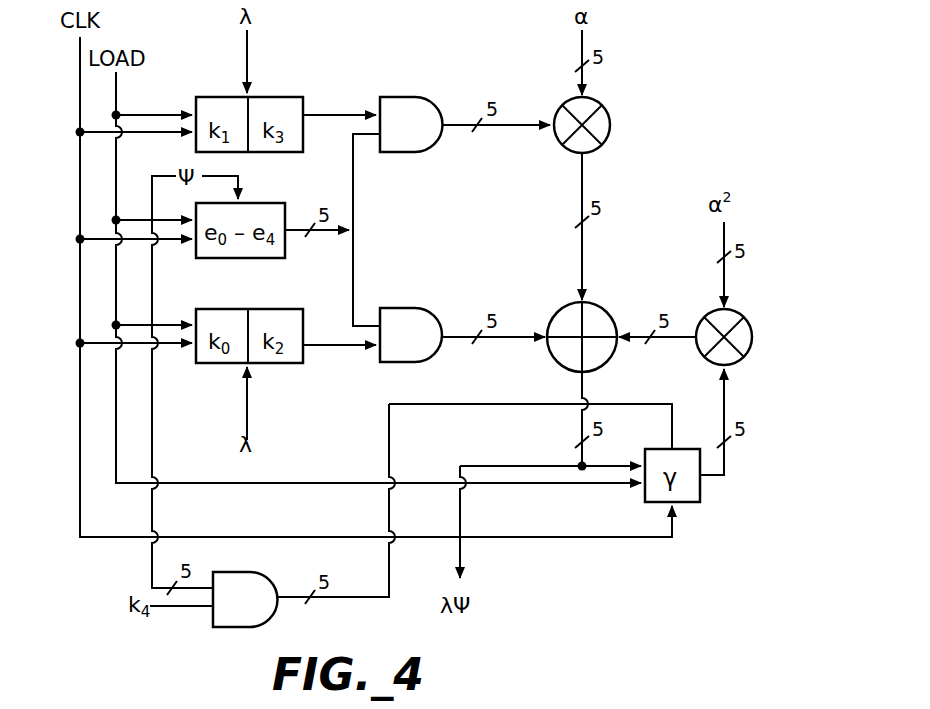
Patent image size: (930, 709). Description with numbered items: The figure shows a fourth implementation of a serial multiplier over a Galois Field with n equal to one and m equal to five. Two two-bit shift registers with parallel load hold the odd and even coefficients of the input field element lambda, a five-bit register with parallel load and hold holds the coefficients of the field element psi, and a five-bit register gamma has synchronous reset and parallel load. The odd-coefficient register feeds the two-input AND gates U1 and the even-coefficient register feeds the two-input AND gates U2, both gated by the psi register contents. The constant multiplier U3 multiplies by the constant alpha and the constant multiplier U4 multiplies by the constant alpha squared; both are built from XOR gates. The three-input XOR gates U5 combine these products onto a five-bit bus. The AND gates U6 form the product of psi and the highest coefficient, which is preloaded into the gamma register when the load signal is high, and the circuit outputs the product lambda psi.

The 2-input AND gate U1 is at (411, 111).
The 2-input AND gate U2 is at (411, 321).
The constant Galois Field multiplier U3 is at (588, 116).
The constant Galois Field multiplier U4 is at (731, 326).
The 3-input XOR gate U5 is at (585, 326).
The 2-input AND gate U6 is at (245, 585).